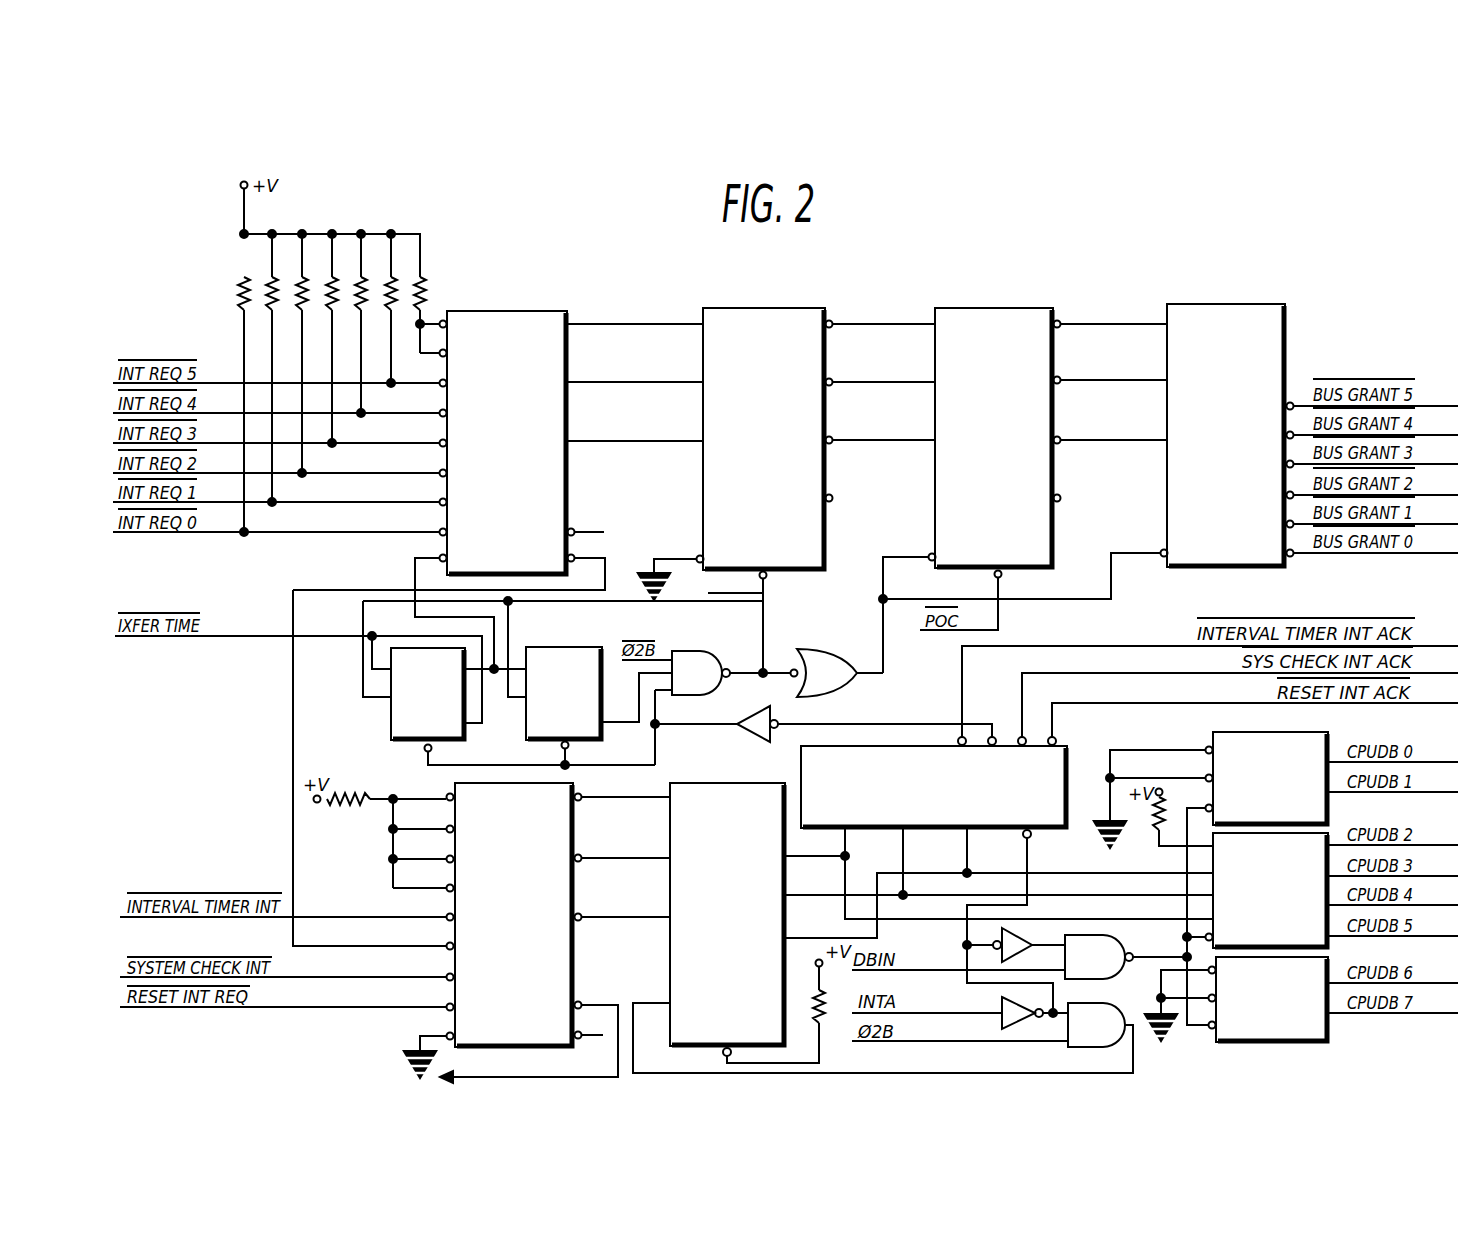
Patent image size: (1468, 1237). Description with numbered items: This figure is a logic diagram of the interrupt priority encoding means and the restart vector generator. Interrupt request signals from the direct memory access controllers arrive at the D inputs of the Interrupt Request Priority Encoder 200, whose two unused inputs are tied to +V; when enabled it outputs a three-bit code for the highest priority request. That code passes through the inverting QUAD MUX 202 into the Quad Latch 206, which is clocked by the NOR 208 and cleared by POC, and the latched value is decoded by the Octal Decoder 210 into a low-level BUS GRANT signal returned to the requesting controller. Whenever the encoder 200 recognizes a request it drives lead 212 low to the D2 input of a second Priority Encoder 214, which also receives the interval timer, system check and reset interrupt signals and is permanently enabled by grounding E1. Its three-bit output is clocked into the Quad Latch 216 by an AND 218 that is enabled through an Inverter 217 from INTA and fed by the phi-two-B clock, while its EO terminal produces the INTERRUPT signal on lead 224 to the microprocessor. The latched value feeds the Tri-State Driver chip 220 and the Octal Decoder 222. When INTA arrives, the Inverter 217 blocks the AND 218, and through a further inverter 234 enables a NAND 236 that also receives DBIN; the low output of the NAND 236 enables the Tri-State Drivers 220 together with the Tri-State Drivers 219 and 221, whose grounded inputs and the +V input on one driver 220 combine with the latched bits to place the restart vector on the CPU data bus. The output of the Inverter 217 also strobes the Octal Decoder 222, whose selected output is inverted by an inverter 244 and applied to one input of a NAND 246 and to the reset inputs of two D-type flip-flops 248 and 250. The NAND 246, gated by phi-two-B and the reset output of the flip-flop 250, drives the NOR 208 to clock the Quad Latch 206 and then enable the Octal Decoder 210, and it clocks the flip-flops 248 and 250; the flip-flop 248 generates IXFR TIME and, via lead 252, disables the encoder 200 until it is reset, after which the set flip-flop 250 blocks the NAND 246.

The Interrupt Request Priority Encoder 200 is at (546, 310).
The QUAD MUX 202 is at (818, 306).
The Quad Latch 206 is at (1041, 306).
The NOR 208 is at (846, 648).
The Octal Decoder 210 is at (1285, 302).
The lead 212 is at (598, 575).
The Priority Encoder 214 is at (453, 787).
The Quad Latch 216 is at (710, 782).
The Inverter 217 is at (1000, 1004).
The AND 218 is at (1066, 1050).
The Tri-State Driver 219 is at (1322, 1042).
The Tri-State Driver chip 220 is at (1303, 941).
The Tri-State Driver 221 is at (1328, 812).
The Octal Decoder 222 is at (800, 760).
The lead 224 is at (553, 1078).
The inverter 234 is at (1022, 936).
The NAND 236 is at (1100, 980).
The inverter 244 is at (758, 712).
The NAND 246 is at (704, 656).
The D-type flip-flop 248 is at (398, 742).
The D-type flip-flop 250 is at (563, 647).
The lead 252 is at (414, 579).